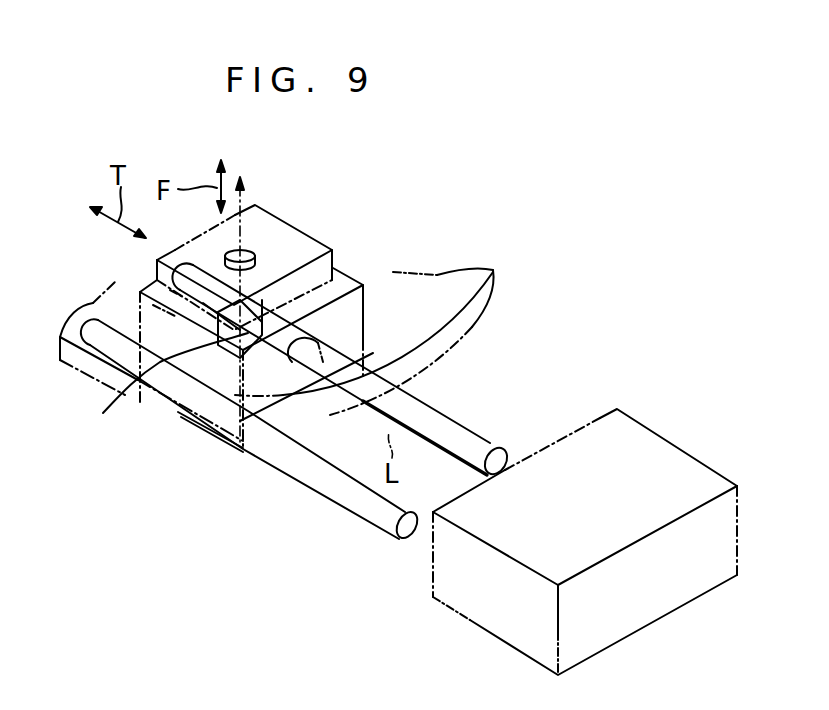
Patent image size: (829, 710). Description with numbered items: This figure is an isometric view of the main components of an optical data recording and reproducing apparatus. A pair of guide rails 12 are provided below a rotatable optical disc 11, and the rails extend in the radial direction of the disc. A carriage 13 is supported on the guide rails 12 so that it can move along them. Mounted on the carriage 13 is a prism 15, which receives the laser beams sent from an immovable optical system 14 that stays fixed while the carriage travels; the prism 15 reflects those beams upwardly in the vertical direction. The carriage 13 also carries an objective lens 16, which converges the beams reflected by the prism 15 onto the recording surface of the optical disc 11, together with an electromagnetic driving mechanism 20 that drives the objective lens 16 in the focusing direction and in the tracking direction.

The optical disc 11 is at (510, 312).
The guide rails 12 is at (297, 477).
The carriage 13 is at (103, 413).
The immovable optical system 14 is at (600, 408).
The prism 15 is at (182, 402).
The objective lens 16 is at (255, 255).
The electromagnetic driving mechanism 20 is at (318, 270).